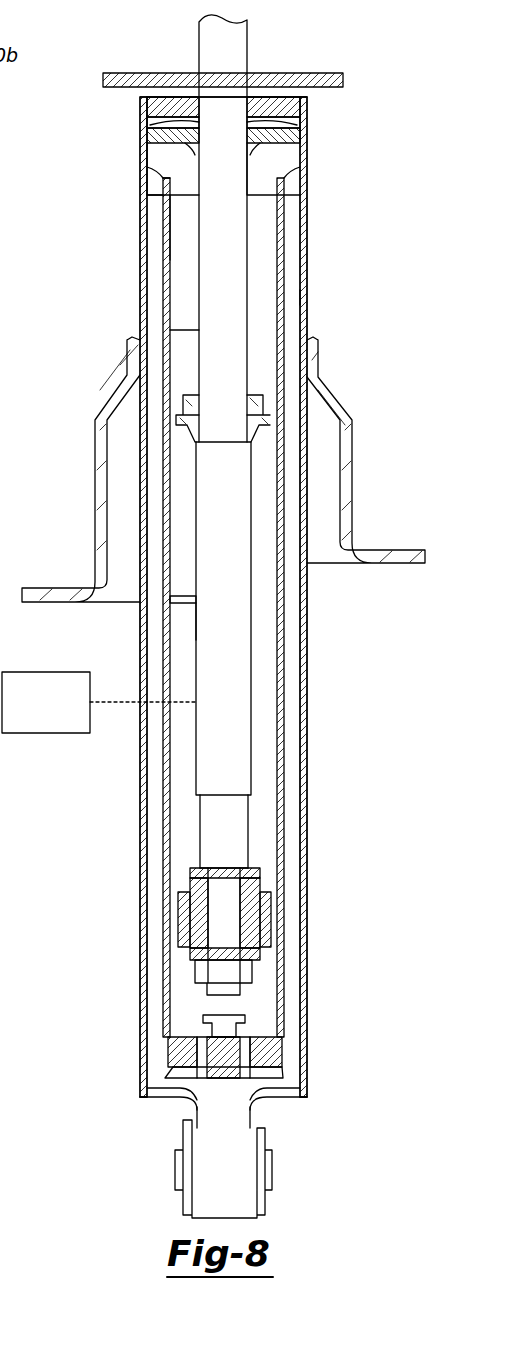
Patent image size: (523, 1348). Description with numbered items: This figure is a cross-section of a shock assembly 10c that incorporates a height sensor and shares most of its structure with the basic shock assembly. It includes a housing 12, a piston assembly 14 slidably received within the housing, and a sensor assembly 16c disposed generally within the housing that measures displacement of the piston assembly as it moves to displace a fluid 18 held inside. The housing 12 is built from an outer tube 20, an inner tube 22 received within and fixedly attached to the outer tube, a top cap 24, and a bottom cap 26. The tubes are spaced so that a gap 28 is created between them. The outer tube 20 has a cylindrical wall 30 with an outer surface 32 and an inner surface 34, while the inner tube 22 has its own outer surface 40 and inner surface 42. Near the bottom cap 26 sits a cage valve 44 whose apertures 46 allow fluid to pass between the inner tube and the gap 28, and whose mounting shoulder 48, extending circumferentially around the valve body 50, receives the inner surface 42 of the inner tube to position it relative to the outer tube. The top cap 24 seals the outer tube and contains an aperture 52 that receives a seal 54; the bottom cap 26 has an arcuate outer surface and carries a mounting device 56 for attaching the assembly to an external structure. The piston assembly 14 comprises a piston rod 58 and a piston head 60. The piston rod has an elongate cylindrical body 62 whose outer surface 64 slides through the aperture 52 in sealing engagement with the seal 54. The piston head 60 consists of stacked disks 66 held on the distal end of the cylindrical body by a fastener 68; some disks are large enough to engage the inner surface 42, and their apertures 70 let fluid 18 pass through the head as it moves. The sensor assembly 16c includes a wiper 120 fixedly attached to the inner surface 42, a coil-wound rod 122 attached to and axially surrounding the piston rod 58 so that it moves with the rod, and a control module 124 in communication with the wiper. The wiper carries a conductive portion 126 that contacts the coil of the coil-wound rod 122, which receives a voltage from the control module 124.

The shock assembly 10c is at (352, 67).
The housing 12 is at (310, 180).
The piston assembly 14 is at (257, 853).
The sensor assembly 16c is at (186, 584).
The fluid 18 is at (176, 779).
The outer tube 20 is at (309, 266).
The inner tube 22 is at (161, 300).
The top cap 24 is at (300, 107).
The bottom cap 26 is at (292, 1100).
The gap 28 is at (293, 719).
The cylindrical wall 30 is at (300, 323).
The outer surface 32 is at (303, 297).
The inner surface 34 is at (283, 243).
The outer surface 40 is at (164, 236).
The inner surface 42 is at (171, 258).
The cage valve 44 is at (287, 1081).
The apertures 46 is at (276, 1041).
The mounting shoulder 48 is at (166, 1057).
The body 50 is at (227, 1072).
The aperture 52 is at (258, 121).
The seal 54 is at (190, 132).
The mounting device 56 is at (238, 1197).
The piston rod 58 is at (251, 827).
The piston head 60 is at (256, 921).
The cylindrical body 62 is at (221, 825).
The outer surface 64 is at (218, 334).
The disks 66 is at (190, 882).
The fastener 68 is at (200, 966).
The apertures 70 is at (264, 931).
The wiper 120 is at (171, 600).
The coil-wound rod 122 is at (236, 677).
The control module 124 is at (99, 702).
The conductive portion 126 is at (183, 605).